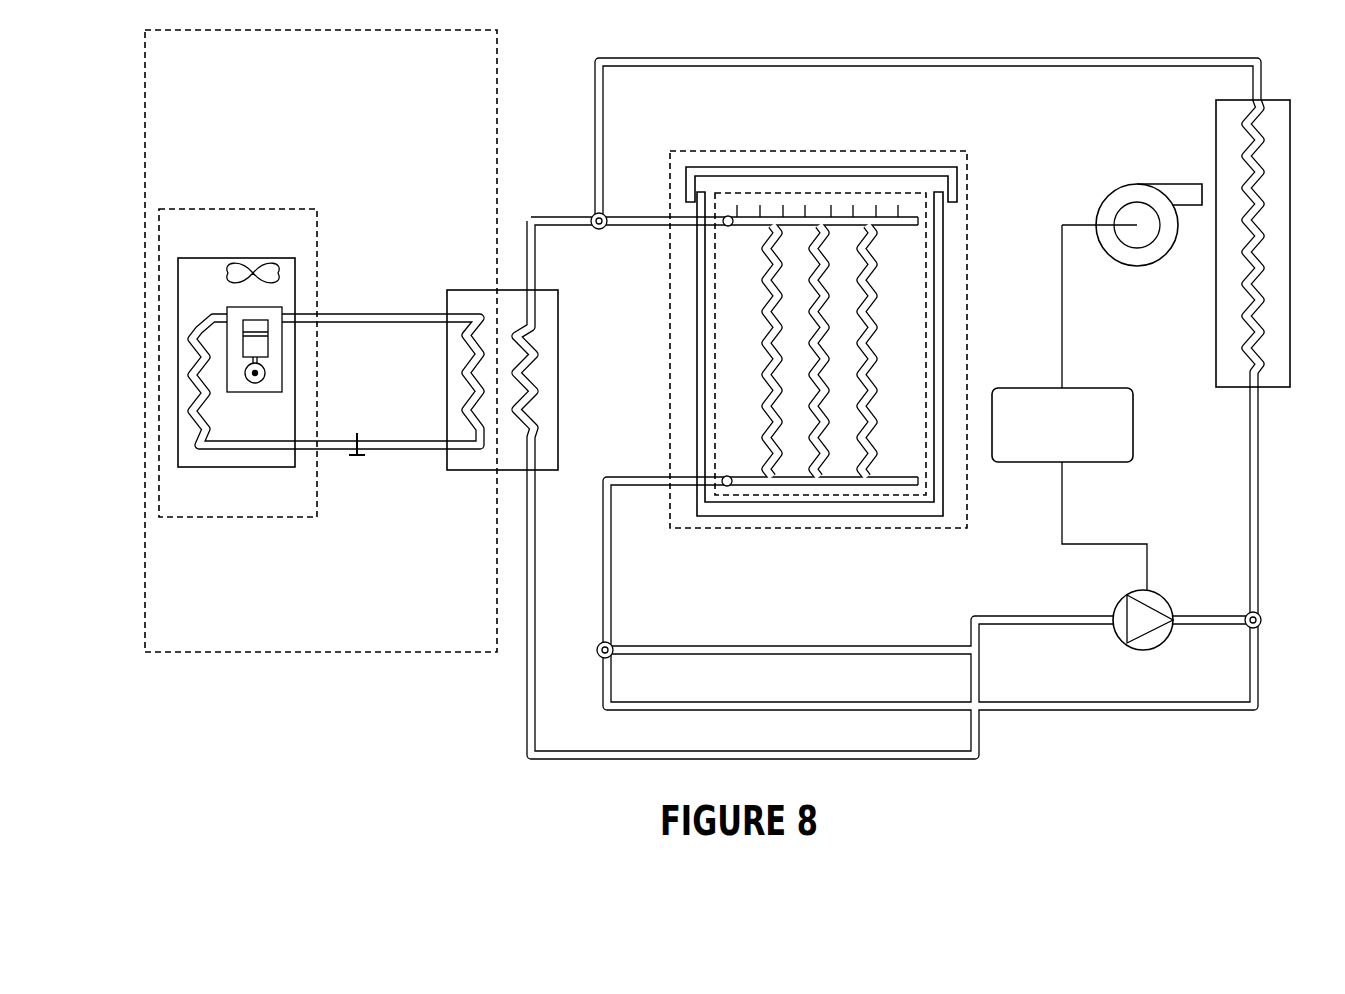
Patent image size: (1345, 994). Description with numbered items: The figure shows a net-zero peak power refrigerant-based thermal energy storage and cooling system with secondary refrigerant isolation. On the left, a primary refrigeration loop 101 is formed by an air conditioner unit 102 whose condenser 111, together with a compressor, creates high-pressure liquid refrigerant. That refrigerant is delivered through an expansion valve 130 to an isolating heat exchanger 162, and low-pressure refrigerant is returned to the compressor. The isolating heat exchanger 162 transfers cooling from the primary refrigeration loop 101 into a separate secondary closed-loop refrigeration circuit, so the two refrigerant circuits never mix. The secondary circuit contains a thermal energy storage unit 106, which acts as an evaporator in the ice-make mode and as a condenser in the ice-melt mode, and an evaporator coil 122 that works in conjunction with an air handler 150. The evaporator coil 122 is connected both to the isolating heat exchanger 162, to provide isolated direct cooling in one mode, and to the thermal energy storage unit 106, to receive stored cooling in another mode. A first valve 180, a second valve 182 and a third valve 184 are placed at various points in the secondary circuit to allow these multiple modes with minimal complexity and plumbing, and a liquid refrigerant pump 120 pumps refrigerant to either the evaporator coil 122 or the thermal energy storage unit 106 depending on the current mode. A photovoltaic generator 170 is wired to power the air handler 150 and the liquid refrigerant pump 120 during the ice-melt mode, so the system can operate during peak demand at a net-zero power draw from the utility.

The primary refrigeration loop 101 is at (410, 653).
The air conditioner unit 102 is at (238, 518).
The thermal energy storage unit 106 is at (853, 528).
The condenser 111 is at (196, 318).
The liquid refrigerant pump 120 is at (1173, 605).
The evaporator coil 122 is at (1213, 125).
The expansion valve 130 is at (362, 456).
The air handler 150 is at (1141, 266).
The isolating heat exchanger 162 is at (462, 289).
The photovoltaic generator 170 is at (1040, 388).
The valve 180 is at (599, 229).
The valve 182 is at (611, 644).
The valve 184 is at (1262, 620).